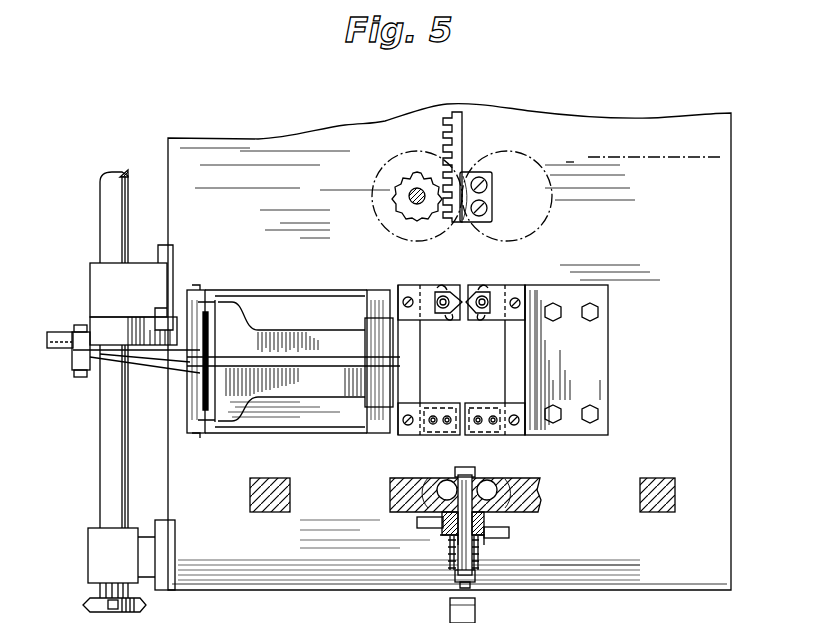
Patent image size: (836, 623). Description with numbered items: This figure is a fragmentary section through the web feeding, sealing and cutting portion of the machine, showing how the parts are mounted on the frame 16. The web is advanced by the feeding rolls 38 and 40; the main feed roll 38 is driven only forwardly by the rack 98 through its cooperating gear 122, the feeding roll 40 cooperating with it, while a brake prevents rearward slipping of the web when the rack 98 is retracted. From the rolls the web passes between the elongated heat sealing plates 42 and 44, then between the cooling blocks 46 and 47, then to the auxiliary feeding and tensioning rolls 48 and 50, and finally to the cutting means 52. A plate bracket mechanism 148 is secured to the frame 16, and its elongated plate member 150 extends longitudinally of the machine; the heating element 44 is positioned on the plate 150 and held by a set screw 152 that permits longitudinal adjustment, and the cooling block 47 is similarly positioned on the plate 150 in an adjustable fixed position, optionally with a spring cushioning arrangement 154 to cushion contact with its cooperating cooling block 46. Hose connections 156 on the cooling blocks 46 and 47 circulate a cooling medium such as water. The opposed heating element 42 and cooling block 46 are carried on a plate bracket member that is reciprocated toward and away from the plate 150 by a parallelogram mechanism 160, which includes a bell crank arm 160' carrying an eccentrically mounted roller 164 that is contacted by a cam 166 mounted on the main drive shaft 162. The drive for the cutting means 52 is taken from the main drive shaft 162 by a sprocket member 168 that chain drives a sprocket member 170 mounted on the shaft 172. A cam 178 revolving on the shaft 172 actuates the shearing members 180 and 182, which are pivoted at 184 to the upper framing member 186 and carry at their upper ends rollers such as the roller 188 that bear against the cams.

The frame 16 is at (703, 355).
The main feed roll 38 is at (378, 186).
The feeding roll 40 is at (644, 168).
The heating element 42 is at (429, 287).
The heating element 44 is at (494, 296).
The cooling block 46 is at (424, 402).
The cooling block 47 is at (472, 402).
The auxiliary feeding and tensioning roll 48 is at (443, 484).
The auxiliary feeding and tensioning roll 50 is at (478, 478).
The cutting means 52 is at (498, 545).
The rack 98 is at (463, 126).
The gear 122 is at (395, 210).
The plate bracket mechanism 148 is at (620, 358).
The plate member 150 is at (522, 354).
The set screw 152 is at (527, 286).
The spring cushioning arrangement 154 is at (498, 428).
The hose connections 156 is at (450, 428).
The parallelogram mechanism 160 is at (293, 377).
The bell crank arm 160' is at (136, 383).
The main drive shaft 162 is at (103, 198).
The roller 164 is at (76, 345).
The cam 166 is at (55, 330).
The sprocket member 168 is at (85, 604).
The sprocket member 170 is at (478, 620).
The shaft 172 is at (569, 613).
The cam 178 is at (450, 612).
The shearing member 180 is at (425, 524).
The shearing member 182 is at (500, 531).
The pivot 184 is at (460, 545).
The upper framing member 186 is at (540, 486).
The roller 188 is at (309, 613).